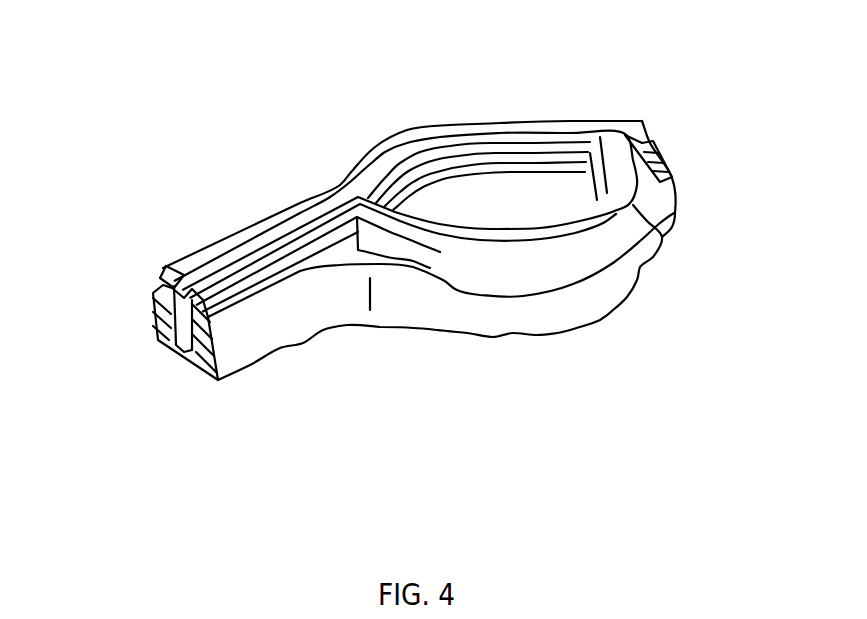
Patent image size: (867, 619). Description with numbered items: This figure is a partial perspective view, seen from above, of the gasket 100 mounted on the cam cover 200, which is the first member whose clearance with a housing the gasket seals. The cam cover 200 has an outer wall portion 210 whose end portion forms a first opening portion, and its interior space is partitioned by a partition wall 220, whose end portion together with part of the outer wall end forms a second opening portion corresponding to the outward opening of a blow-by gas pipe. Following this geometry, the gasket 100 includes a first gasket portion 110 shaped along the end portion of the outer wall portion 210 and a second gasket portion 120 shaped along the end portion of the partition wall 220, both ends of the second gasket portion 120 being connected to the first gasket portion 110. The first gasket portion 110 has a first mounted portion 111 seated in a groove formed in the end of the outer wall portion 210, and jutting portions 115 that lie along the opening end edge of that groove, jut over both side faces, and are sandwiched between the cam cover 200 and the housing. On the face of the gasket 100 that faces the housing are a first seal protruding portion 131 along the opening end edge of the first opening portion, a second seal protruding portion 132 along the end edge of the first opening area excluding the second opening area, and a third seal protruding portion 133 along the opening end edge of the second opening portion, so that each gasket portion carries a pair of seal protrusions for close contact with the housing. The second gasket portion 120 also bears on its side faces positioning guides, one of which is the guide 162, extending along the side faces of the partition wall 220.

The gasket 100 is at (601, 110).
The first gasket portion 110 is at (303, 192).
The first mounted portion 111 is at (183, 335).
The jutting portions 115 is at (153, 273).
The second gasket portion 120 is at (452, 298).
The first seal protruding portion 131 is at (183, 265).
The second seal protruding portion 132 is at (228, 257).
The third seal protruding portion 133 is at (450, 223).
The guide 162 is at (577, 267).
The cam cover 200 is at (276, 321).
The outer wall portion 210 is at (235, 353).
The partition wall 220 is at (533, 318).